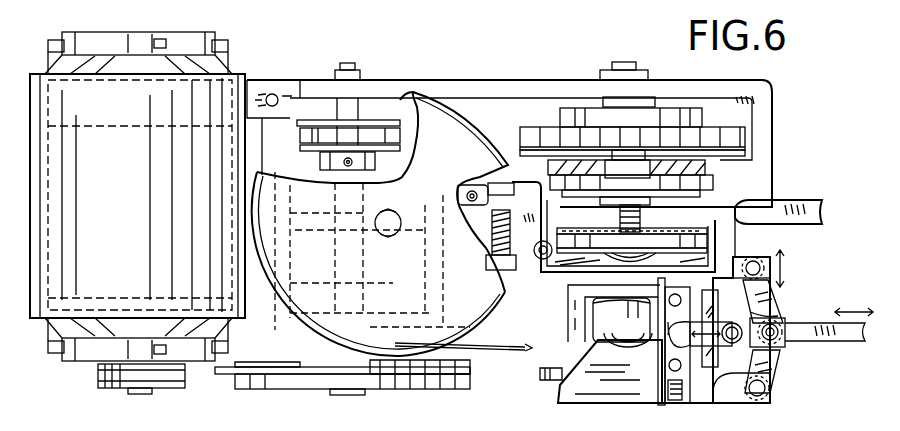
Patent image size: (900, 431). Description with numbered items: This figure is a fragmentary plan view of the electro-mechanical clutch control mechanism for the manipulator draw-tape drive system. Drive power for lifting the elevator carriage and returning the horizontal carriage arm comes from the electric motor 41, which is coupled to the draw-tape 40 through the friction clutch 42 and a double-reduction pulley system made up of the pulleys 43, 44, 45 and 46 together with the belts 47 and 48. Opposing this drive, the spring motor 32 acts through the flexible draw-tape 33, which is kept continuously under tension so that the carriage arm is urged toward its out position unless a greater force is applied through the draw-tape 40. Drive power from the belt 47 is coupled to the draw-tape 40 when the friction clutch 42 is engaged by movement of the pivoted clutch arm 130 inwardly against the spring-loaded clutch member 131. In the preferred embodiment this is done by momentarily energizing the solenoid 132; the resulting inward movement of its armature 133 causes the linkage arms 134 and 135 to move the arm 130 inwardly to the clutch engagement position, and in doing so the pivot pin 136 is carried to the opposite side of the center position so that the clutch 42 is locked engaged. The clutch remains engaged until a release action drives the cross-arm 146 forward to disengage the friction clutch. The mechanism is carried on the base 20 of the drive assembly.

The electric motor 41 is at (116, 208).
The pulley 46 is at (120, 390).
The belt 48 is at (222, 375).
The pulley 45 is at (322, 390).
The pulley 44 is at (385, 120).
The spring motor 32 is at (428, 157).
The belt 47 is at (508, 140).
The pulley 43 is at (740, 128).
The friction clutch 42 is at (648, 232).
The spring-loaded clutch member 131 is at (620, 236).
The pivoted clutch arm 130 is at (578, 270).
The draw-tape 40 is at (820, 210).
The flexible draw-tape 33 is at (498, 345).
The base frame 20 is at (693, 392).
The solenoid 132 is at (608, 320).
The armature 133 is at (722, 306).
The linkage arm 134 is at (770, 300).
The linkage arm 135 is at (770, 360).
The pivot pin 136 is at (776, 326).
The cross-arm 146 is at (848, 341).